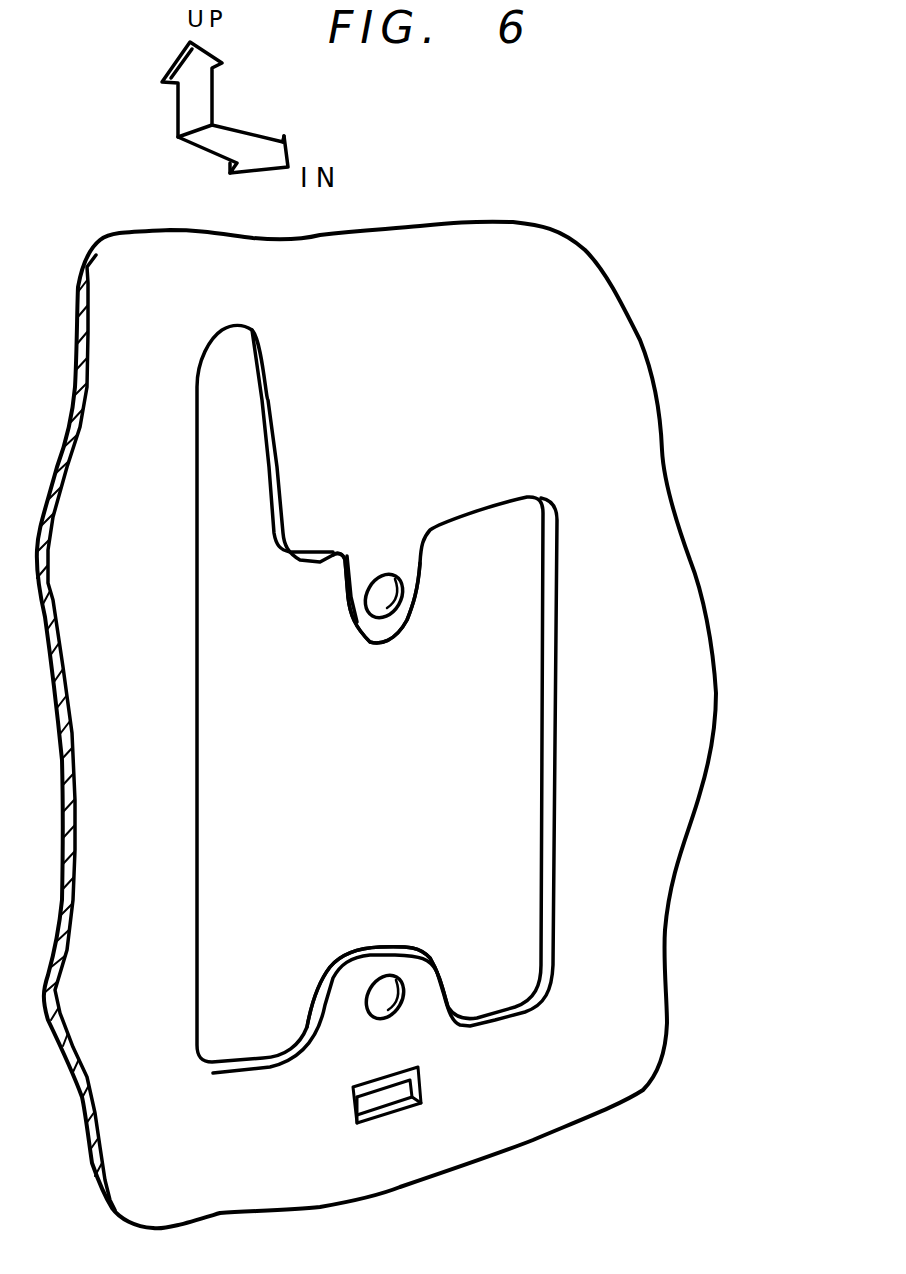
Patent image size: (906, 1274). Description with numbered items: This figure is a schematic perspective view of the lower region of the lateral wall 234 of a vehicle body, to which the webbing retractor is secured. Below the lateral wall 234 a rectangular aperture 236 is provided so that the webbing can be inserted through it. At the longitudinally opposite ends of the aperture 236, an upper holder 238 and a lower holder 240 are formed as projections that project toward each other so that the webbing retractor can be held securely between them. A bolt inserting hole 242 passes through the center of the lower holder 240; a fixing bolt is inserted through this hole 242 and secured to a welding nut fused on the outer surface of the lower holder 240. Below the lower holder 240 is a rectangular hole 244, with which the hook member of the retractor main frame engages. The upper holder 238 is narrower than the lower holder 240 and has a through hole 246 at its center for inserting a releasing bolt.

The lateral wall 234 is at (520, 222).
The rectangular aperture 236 is at (398, 775).
The upper holder 238 is at (373, 645).
The lower holder 240 is at (340, 958).
The bolt inserting hole 242 is at (403, 1000).
The rectangular hole 244 is at (423, 1078).
The through hole 246 is at (404, 602).